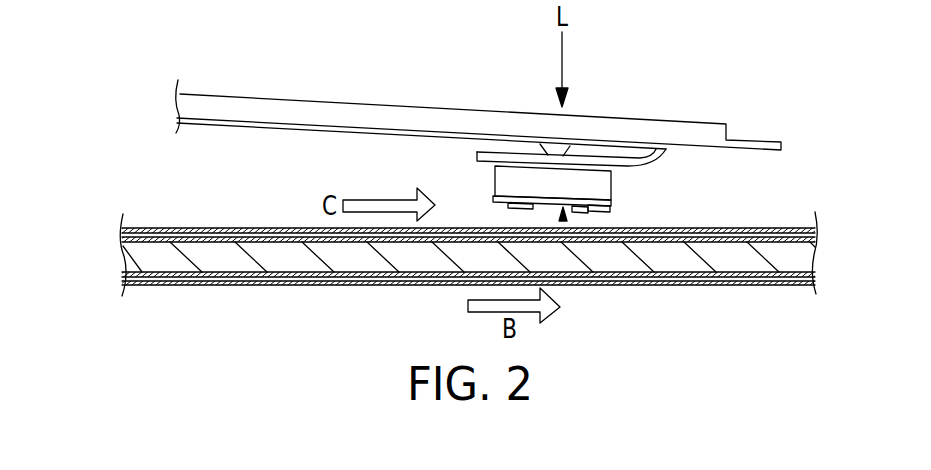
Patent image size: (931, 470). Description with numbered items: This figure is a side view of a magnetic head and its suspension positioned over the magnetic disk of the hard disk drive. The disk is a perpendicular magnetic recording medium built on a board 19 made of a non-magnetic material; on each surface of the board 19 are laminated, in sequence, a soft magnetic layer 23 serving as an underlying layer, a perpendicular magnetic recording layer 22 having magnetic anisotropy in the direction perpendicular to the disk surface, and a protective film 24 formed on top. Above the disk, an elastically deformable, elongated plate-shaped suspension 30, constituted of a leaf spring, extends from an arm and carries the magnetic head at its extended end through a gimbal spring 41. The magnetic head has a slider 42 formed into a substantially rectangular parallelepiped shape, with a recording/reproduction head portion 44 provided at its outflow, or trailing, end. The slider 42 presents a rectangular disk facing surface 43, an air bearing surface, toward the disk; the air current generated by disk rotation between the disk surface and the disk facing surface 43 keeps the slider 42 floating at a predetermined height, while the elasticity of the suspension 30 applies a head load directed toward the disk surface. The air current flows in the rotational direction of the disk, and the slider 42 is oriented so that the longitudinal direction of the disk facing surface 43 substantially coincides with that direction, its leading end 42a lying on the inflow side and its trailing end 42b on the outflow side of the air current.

The board 19 is at (237, 266).
The perpendicular magnetic recording layer 22 is at (202, 233).
The soft magnetic layer 23 is at (122, 246).
The protective film 24 is at (147, 228).
The suspension 30 is at (299, 111).
The gimbal spring 41 is at (488, 152).
The slider 42 is at (558, 149).
The leading end 42a is at (495, 184).
The trailing end 42b is at (612, 198).
The disk facing surface 43 is at (563, 222).
The recording/reproduction head portion 44 is at (607, 187).